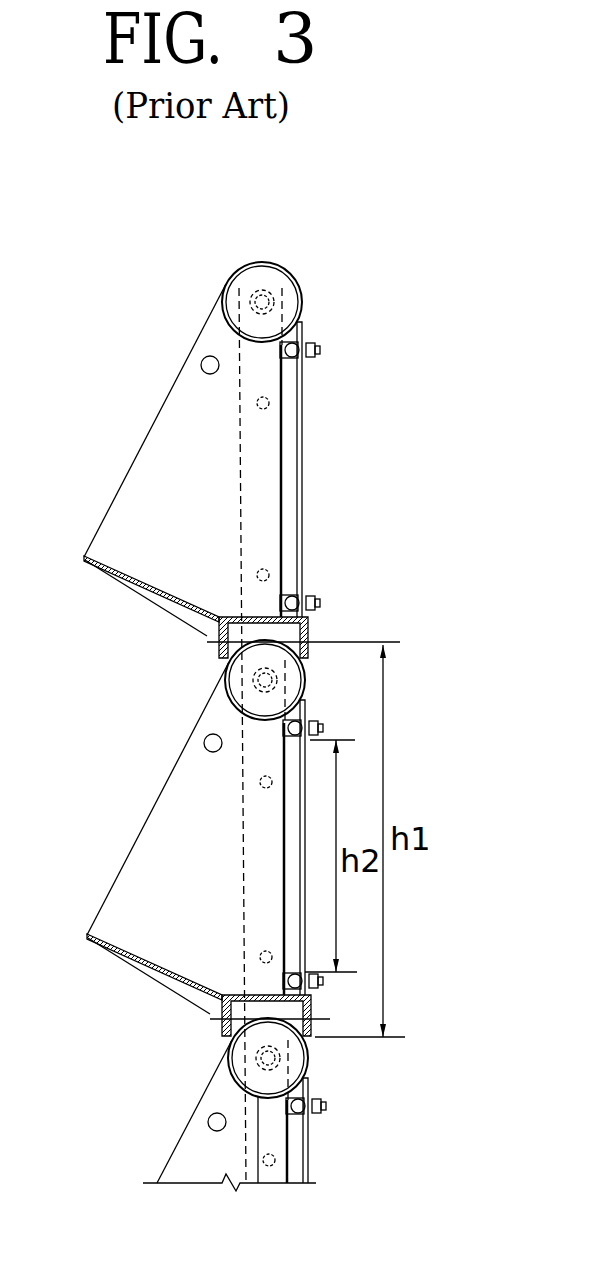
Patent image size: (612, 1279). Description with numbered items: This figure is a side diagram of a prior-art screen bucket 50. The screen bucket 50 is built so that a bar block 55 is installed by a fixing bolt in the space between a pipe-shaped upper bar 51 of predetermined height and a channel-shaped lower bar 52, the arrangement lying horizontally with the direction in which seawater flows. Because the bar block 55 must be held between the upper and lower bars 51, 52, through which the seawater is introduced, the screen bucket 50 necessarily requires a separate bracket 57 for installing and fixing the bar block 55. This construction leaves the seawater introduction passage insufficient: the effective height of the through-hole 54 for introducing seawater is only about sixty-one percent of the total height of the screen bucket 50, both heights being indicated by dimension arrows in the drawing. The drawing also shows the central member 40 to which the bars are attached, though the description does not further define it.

The vertical support member 40 is at (267, 432).
The screen bucket 50 is at (137, 453).
The upper bar 51 is at (300, 295).
The lower bar 52 is at (205, 631).
The through-hole 54 is at (300, 528).
The bar block 55 is at (292, 470).
The bracket 57 is at (303, 326).